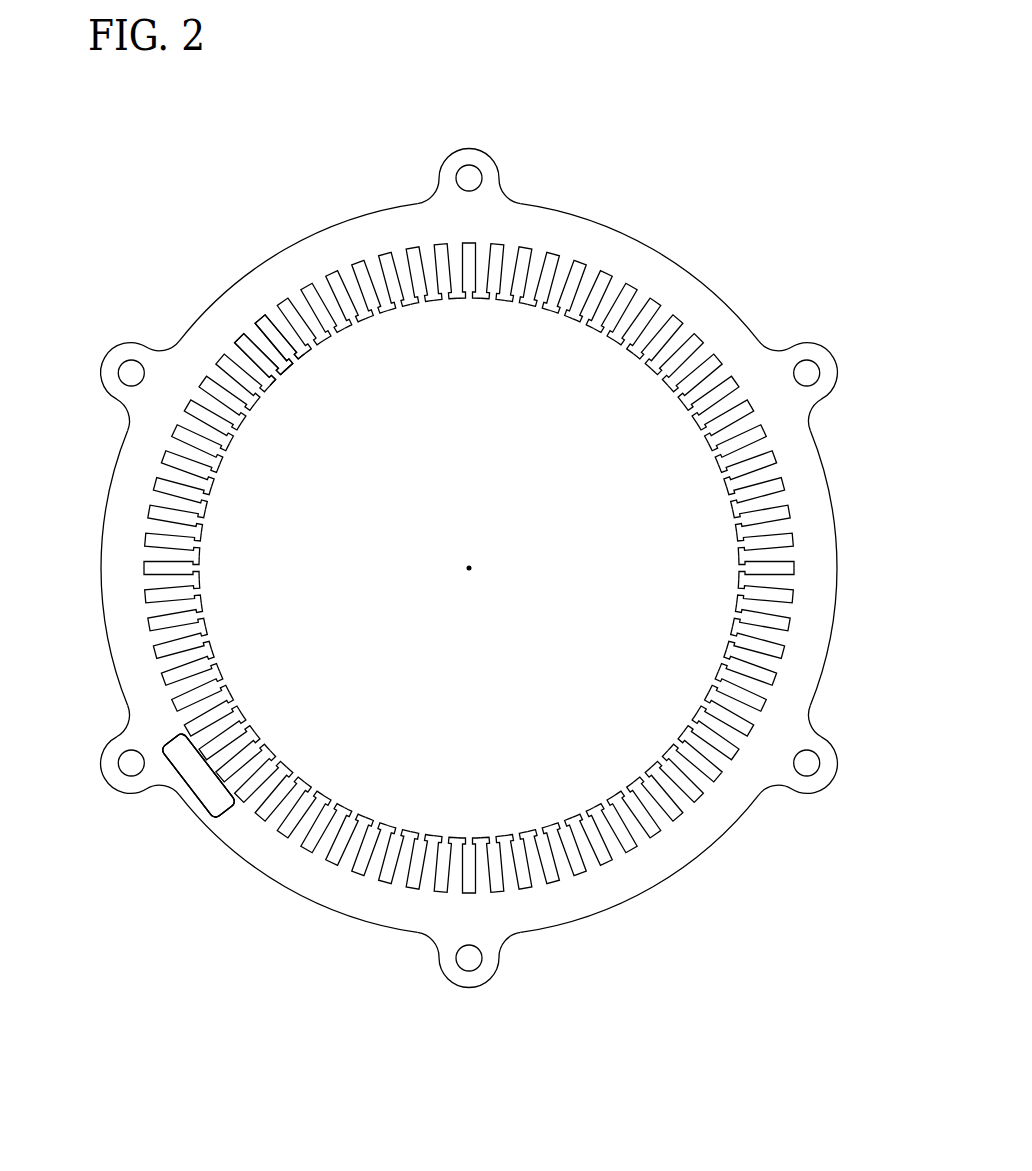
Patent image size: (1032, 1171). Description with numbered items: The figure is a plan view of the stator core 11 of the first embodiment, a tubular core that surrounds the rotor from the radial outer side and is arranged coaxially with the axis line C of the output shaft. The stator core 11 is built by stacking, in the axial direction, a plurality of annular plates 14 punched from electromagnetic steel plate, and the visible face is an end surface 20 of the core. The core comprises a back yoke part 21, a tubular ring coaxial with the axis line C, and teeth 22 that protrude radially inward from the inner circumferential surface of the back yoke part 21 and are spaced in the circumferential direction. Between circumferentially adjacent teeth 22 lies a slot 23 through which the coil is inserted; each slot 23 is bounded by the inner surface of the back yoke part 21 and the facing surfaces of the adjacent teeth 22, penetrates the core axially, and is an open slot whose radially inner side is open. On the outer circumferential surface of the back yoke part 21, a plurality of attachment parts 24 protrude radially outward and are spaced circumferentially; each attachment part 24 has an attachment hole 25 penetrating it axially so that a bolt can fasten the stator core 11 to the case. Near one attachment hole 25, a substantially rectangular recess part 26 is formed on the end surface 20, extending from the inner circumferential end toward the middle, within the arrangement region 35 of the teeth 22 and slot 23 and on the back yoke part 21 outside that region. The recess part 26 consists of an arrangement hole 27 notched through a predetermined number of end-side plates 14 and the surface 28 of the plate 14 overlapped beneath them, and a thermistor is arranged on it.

The stator core 11 is at (684, 260).
The plate 14 is at (817, 505).
The end surface 20 is at (150, 695).
The back yoke part 21 is at (347, 230).
The teeth 22 is at (283, 332).
The slot 23 is at (258, 340).
The attachment part 24 is at (484, 151).
The attachment hole 25 is at (471, 172).
The recess part 26 is at (238, 943).
The arrangement hole 27 is at (214, 806).
The surface 28 is at (200, 778).
The arrangement region 35 is at (195, 207).
The axis line C is at (470, 565).